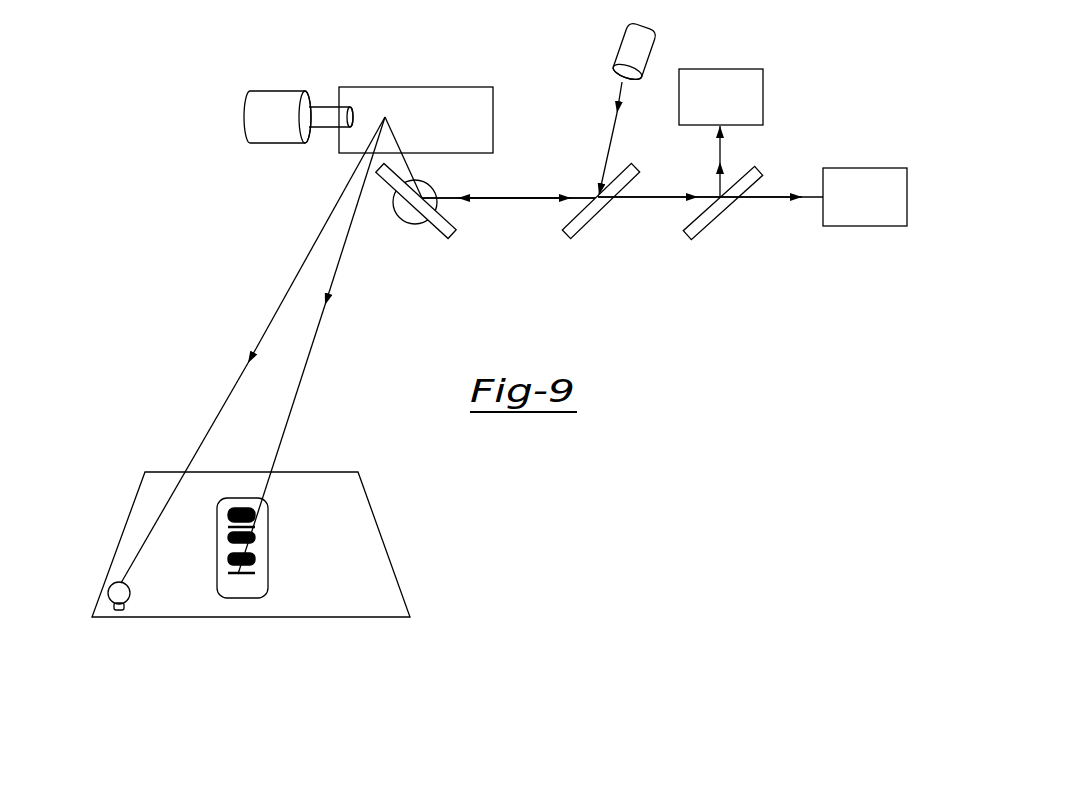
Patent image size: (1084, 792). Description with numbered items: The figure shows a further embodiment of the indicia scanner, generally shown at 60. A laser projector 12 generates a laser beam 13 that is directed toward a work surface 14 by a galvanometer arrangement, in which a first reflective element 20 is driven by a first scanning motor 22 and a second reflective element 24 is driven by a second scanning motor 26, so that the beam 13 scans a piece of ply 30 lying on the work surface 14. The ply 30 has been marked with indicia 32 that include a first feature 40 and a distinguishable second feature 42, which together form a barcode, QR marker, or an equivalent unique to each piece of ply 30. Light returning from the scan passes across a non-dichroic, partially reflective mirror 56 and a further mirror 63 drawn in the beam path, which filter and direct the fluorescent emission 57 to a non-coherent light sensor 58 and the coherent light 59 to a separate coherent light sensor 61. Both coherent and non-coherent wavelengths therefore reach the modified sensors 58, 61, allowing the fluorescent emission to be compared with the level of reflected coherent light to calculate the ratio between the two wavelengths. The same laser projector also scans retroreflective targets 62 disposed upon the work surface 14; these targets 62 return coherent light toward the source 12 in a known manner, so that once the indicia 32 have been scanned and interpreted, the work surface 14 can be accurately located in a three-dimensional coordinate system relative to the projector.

The further embodiment 60 is at (280, 62).
The first scanning motor 22 is at (270, 128).
The first reflective element 20 is at (424, 128).
The laser projector 12 is at (634, 52).
The laser beam 13 is at (614, 119).
The second reflective element 24 is at (452, 235).
The second scanning motor 26 is at (401, 224).
The non-dichroic partially reflective mirror 56 is at (576, 236).
The beam splitter 63 is at (700, 235).
The fluorescent emission 57 is at (722, 150).
The non-coherent light sensor 58 is at (720, 68).
The coherent light 59 is at (768, 200).
The coherent light sensor 61 is at (866, 228).
The work surface 14 is at (320, 574).
The piece of ply 30 is at (268, 532).
The indicia 32 is at (243, 496).
The first feature 40 is at (228, 558).
The second feature 42 is at (258, 569).
The retroreflective targets 62 is at (121, 612).